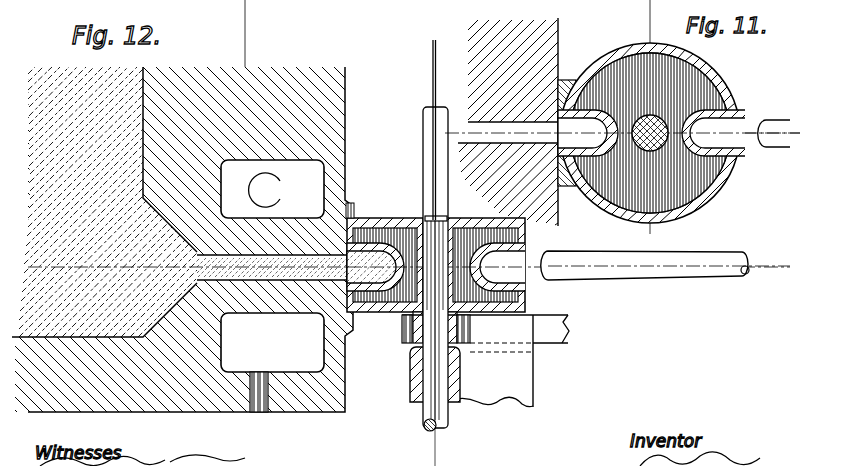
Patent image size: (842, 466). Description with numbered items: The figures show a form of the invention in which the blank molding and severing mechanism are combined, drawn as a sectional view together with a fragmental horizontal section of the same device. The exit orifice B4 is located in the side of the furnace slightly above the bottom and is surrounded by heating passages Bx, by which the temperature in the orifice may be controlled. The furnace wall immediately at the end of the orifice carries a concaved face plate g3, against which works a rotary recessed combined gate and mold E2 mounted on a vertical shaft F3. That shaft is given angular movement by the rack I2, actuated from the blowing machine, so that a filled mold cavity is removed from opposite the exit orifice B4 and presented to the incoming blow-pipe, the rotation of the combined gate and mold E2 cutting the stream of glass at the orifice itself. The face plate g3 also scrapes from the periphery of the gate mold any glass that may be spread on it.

In FIG. 12, the heating passages Bx is at (287, 183).
In FIG. 12, the exit orifice B4 is at (297, 257).
In FIG. 11, the exit orifice B4 is at (561, 78).
In FIG. 12, the concaved face plate g3 is at (352, 246).
In FIG. 11, the concaved face plate g3 is at (586, 70).
In FIG. 12, the rotary recessed combined gate and mold E2 is at (391, 313).
In FIG. 11, the rotary recessed combined gate and mold E2 is at (693, 102).
In FIG. 12, the vertical shaft F3 is at (438, 405).
In FIG. 11, the vertical shaft F3 is at (672, 143).
In FIG. 12, the rack I2 is at (553, 331).